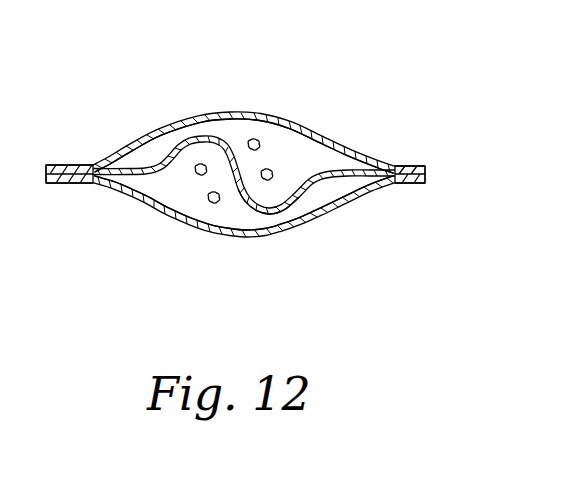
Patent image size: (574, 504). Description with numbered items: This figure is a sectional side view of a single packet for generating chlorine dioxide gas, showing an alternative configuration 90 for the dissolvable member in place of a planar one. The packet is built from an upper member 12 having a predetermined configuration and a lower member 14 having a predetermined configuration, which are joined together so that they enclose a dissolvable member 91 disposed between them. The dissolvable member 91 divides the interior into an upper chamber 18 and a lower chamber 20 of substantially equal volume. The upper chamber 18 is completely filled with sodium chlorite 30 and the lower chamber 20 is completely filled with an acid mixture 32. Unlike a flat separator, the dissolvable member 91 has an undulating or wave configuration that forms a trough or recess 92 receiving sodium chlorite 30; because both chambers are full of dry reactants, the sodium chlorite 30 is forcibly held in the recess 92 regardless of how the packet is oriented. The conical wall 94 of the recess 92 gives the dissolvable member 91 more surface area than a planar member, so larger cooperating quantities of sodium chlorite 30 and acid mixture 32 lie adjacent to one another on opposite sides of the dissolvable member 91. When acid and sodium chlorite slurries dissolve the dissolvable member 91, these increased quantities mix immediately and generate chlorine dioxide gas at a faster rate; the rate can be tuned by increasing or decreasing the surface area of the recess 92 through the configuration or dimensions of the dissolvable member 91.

The alternative configuration 90 is at (349, 91).
The upper member 12 is at (318, 128).
The lower member 14 is at (165, 224).
The upper chamber 18 is at (323, 157).
The lower chamber 20 is at (147, 193).
The sodium chlorite 30 is at (267, 170).
The acid mixture 32 is at (199, 175).
The dissolvable member 91 is at (128, 173).
The recess 92 is at (270, 193).
The conical wall 94 is at (225, 170).